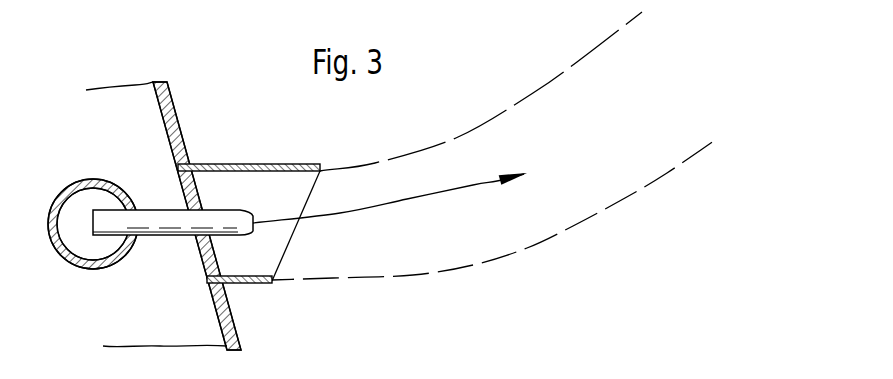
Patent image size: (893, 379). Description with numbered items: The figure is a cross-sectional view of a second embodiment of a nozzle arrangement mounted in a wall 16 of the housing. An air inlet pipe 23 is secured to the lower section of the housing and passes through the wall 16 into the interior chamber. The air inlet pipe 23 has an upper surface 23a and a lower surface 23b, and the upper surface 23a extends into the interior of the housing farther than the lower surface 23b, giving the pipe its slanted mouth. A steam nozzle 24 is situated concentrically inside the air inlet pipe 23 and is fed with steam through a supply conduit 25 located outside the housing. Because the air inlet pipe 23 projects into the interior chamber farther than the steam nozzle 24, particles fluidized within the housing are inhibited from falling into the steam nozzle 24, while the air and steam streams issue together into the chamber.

The wall 16 is at (176, 120).
The air inlet pipe 23 is at (253, 221).
The upper surface 23a is at (309, 164).
The lower surface 23b is at (257, 285).
The steam nozzle 24 is at (170, 230).
The supply conduit 25 is at (86, 179).